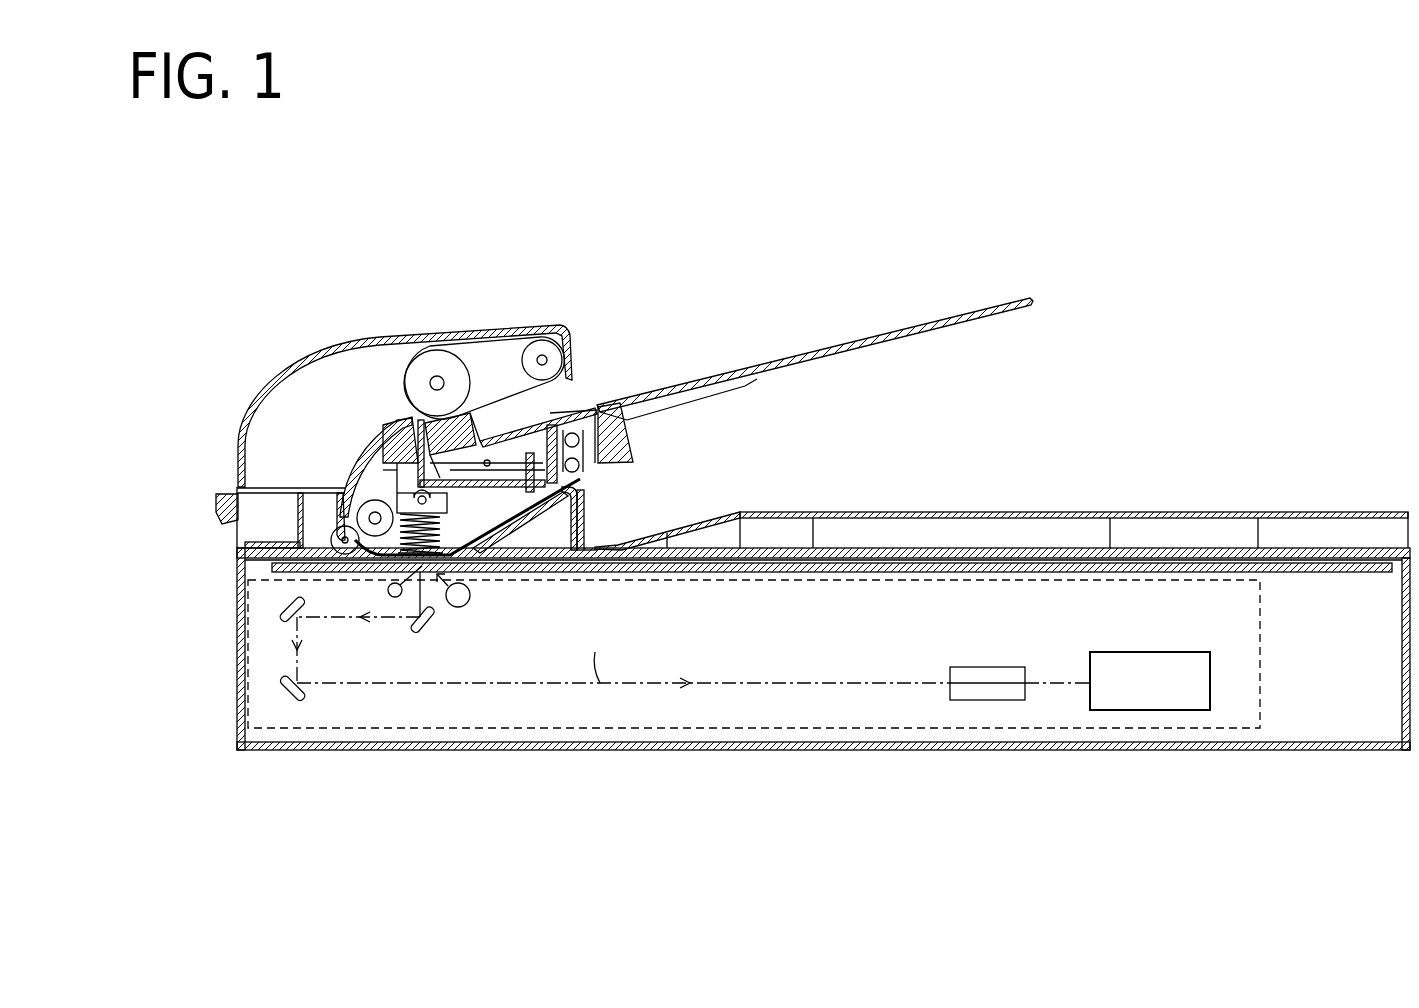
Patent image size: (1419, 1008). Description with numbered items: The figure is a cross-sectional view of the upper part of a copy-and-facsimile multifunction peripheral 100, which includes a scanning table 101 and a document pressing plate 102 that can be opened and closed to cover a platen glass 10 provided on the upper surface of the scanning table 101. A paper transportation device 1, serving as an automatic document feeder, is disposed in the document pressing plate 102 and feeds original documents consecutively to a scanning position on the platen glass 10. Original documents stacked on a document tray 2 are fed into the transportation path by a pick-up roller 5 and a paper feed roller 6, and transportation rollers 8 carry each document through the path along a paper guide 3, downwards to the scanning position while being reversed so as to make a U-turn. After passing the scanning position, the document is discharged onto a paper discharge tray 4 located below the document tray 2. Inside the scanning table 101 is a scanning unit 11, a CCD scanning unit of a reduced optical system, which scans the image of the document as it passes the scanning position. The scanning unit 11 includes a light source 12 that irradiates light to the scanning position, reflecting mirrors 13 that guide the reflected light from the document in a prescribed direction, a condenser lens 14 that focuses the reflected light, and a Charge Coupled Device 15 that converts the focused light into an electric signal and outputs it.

The copy-and-facsimile multifunction peripheral 100 is at (363, 812).
The scanning table 101 is at (237, 655).
The document pressing plate 102 is at (305, 355).
The paper transportation device 1 is at (596, 374).
The document tray 2 is at (799, 358).
The paper guide 3 is at (356, 437).
The paper discharge tray 4 is at (793, 510).
The pick-up roller 5 is at (543, 380).
The paper feed roller 6 is at (410, 380).
The transportation rollers 8 is at (347, 488).
The platen glass 10 is at (1325, 574).
The scanning unit 11 is at (1262, 655).
The light source 12 is at (387, 591).
The reflecting mirrors 13 is at (436, 626).
The condenser lens 14 is at (990, 665).
The Charge Coupled Device (CCD) 15 is at (1163, 650).